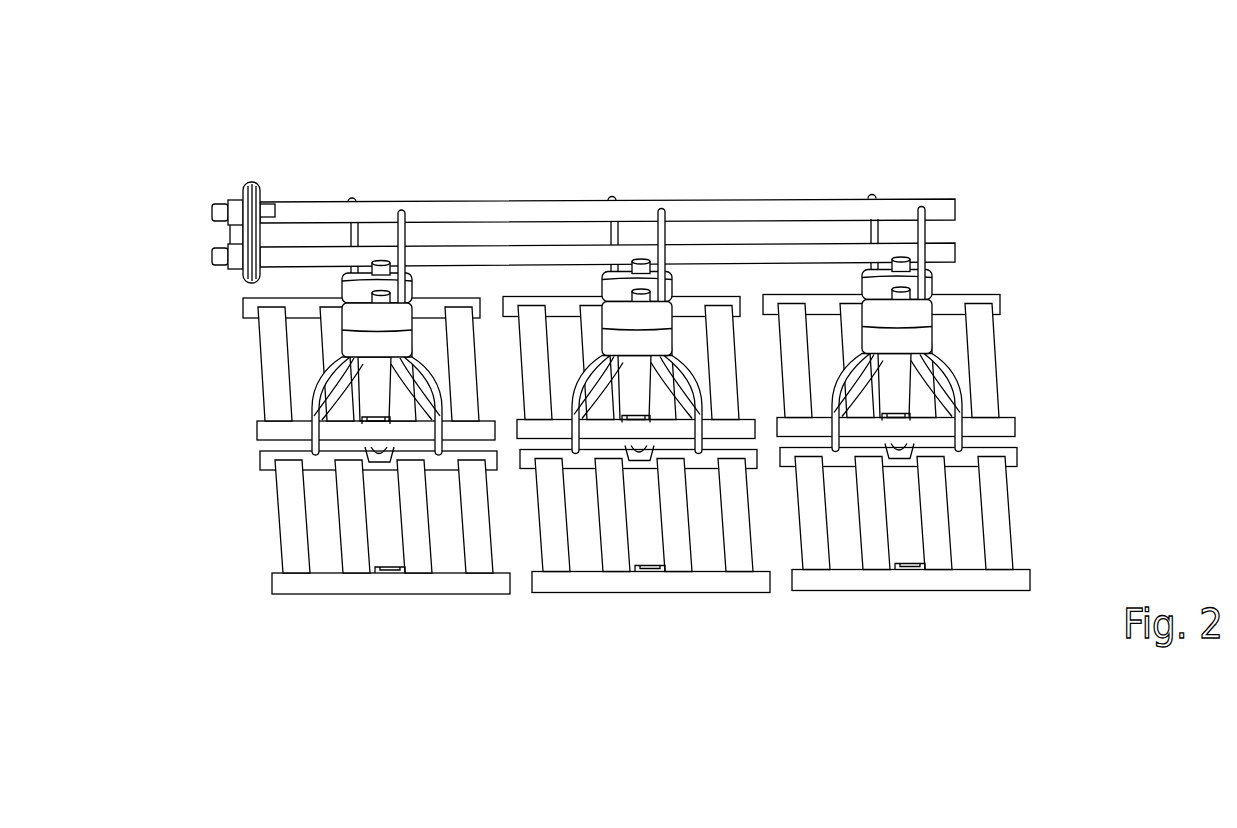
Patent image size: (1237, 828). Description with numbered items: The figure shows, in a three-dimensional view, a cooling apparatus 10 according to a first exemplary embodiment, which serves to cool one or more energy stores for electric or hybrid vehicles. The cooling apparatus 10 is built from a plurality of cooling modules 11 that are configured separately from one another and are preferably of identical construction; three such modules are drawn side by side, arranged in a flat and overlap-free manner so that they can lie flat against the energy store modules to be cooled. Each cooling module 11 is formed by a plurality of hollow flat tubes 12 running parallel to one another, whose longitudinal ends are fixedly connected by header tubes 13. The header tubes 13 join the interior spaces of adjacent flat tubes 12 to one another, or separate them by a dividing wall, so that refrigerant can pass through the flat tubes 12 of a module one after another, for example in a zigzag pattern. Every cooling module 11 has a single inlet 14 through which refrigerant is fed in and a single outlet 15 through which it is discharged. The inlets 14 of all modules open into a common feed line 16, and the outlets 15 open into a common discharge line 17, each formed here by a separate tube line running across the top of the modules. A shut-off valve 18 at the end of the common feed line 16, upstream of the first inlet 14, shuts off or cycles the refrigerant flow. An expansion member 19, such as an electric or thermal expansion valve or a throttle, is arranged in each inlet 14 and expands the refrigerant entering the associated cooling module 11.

The cooling apparatus 10 is at (786, 136).
The cooling module 11 is at (552, 293).
The flat tube 12 is at (292, 522).
The header tube 13 is at (262, 460).
The inlet 14 is at (310, 432).
The outlet 15 is at (447, 456).
The common feed line 16 is at (335, 253).
The common discharge line 17 is at (282, 213).
The shut-off valve 18 is at (235, 218).
The expansion member 19 is at (353, 320).